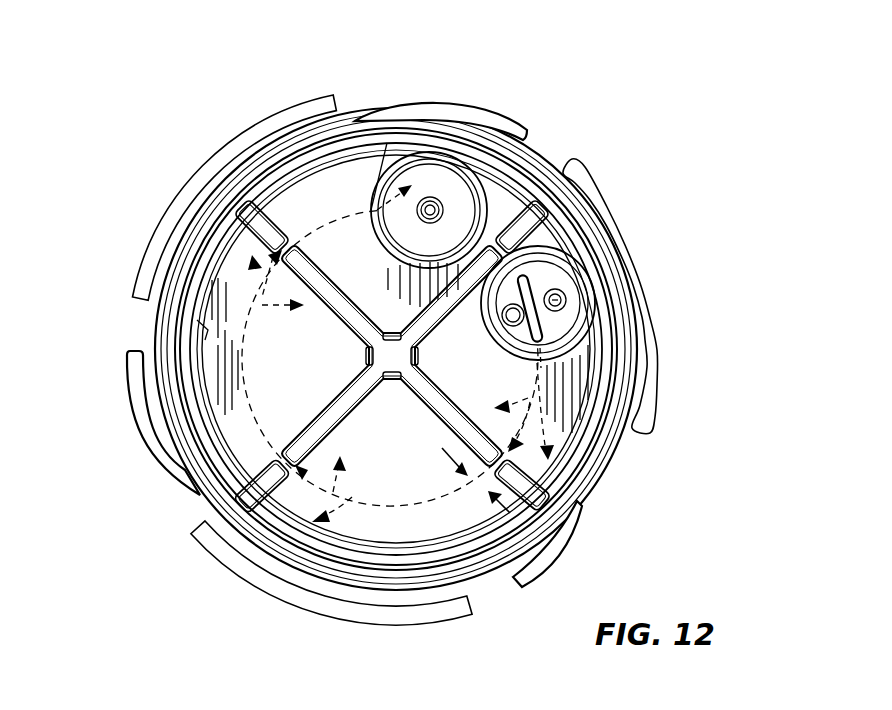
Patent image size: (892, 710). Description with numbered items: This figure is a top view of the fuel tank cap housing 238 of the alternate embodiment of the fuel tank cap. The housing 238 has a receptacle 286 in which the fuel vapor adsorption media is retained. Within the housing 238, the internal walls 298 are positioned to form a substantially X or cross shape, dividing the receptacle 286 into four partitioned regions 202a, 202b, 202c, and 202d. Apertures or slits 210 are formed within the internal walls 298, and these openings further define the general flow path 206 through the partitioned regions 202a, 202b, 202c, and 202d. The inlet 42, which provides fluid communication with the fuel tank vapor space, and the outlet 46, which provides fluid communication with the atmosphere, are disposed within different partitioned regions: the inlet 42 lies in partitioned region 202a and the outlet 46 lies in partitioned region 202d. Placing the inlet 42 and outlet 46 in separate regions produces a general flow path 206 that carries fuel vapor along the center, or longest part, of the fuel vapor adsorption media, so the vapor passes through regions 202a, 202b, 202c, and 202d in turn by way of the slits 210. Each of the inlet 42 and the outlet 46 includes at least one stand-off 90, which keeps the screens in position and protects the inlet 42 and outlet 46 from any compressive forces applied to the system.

The inlet 42 is at (536, 300).
The outlet 46 is at (419, 158).
The stand-off 90 is at (446, 212).
The partitioned region 202a is at (487, 369).
The partitioned region 202b is at (417, 546).
The partitioned region 202c is at (330, 372).
The partitioned region 202d is at (344, 206).
The general flow path 206 is at (267, 537).
The apertures or slits 210 is at (485, 515).
The housing 238 is at (603, 410).
The receptacle 286 is at (222, 434).
The internal walls 298 is at (530, 216).